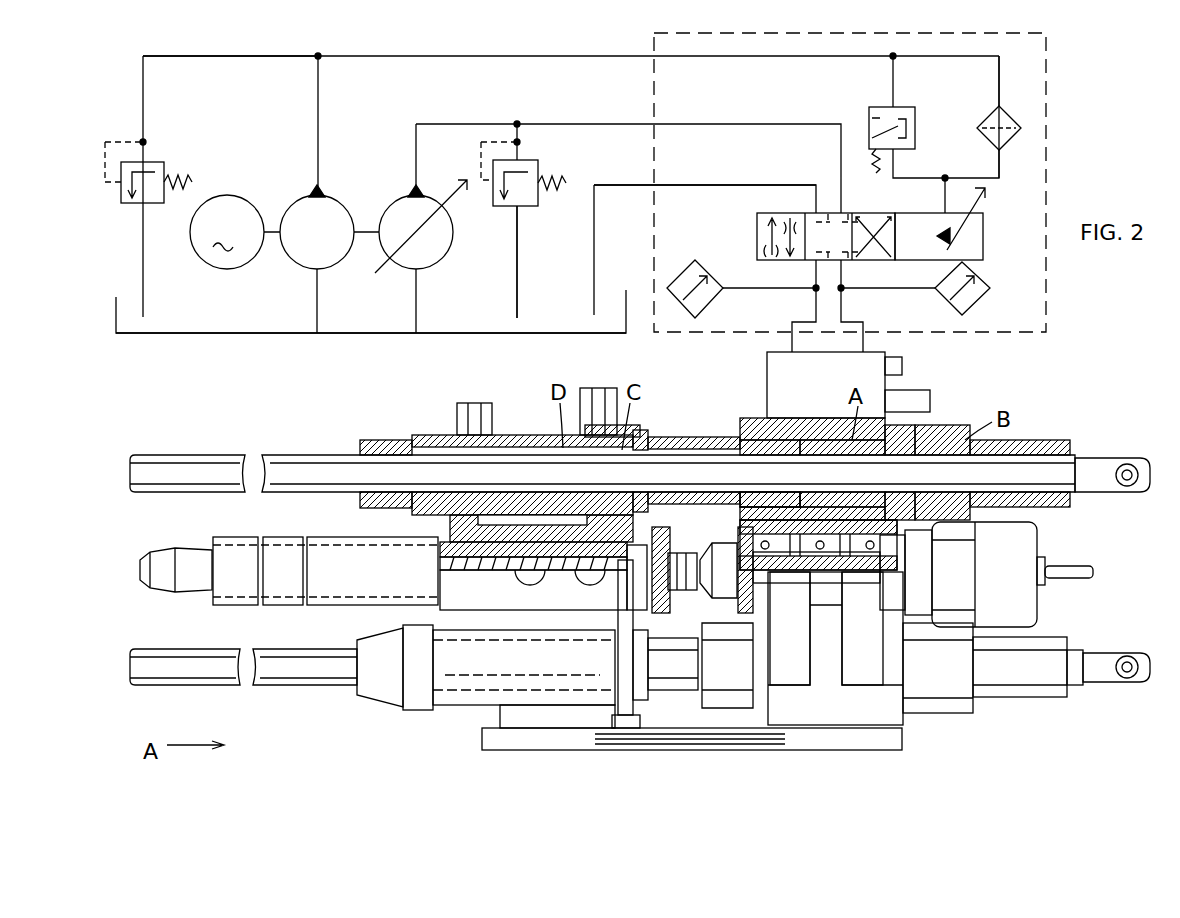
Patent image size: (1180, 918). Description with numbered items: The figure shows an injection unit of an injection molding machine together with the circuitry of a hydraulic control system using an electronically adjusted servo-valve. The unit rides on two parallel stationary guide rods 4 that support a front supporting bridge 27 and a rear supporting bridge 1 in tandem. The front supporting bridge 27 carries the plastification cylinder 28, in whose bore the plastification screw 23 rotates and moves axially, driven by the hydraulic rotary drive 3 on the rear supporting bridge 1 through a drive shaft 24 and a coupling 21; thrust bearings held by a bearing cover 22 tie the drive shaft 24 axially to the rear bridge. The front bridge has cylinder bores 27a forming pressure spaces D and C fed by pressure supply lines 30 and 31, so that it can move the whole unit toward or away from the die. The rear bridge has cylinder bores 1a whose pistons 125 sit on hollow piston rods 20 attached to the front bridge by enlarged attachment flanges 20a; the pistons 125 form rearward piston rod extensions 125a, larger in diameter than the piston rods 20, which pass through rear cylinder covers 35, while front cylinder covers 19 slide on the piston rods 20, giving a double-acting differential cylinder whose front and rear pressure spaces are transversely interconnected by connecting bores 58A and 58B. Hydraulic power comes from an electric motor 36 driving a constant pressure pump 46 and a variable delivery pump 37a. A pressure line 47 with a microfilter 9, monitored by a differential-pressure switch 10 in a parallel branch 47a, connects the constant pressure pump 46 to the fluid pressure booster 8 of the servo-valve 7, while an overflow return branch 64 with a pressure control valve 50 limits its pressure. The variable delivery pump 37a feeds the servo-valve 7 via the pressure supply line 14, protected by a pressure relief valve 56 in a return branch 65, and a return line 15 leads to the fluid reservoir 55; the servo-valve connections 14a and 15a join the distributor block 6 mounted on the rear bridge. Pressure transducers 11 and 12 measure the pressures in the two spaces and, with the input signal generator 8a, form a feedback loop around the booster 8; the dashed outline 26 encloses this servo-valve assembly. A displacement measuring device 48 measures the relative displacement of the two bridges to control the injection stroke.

The rear supporting bridge 1 is at (827, 705).
The cylinder bores 1a is at (818, 428).
The hydraulic rotary drive 3 is at (1025, 558).
The guide rods 4 is at (302, 472).
The distributor block 6 is at (780, 362).
The servo-valve 7 is at (750, 252).
The fluid pressure booster 8 is at (925, 246).
The input signal generator 8a is at (985, 222).
The microfilter 9 is at (992, 115).
The differential-pressure switch 10 is at (870, 120).
The pressure transducer 11 is at (695, 290).
The pressure transducer 12 is at (975, 290).
The pressure supply line 14 is at (700, 124).
The connection port 14a is at (863, 345).
The return line 15 is at (764, 185).
The connection port 15a is at (792, 345).
The front cylinder covers 19 is at (745, 440).
The hollow piston rods 20 is at (690, 445).
The attachment flanges 20a is at (640, 440).
The coupling 21 is at (725, 585).
The bearing cover 22 is at (748, 522).
The plastification screw 23 is at (485, 575).
The drive shaft 24 is at (805, 545).
The hydraulic control unit 26 is at (1046, 110).
The front supporting bridge 27 is at (540, 690).
The cylinder bores 27a is at (505, 512).
The plastification cylinder 28 is at (300, 600).
The pressure supply line 30 is at (470, 412).
The pressure supply line 31 is at (600, 400).
The rear cylinder covers 35 is at (938, 440).
The electric motor 36 is at (228, 195).
The variable delivery pump 37a is at (440, 250).
The constant pressure pump 46 is at (333, 200).
The pressure line 47 is at (318, 97).
The parallel branch 47a is at (893, 95).
The displacement measuring device 48 is at (900, 740).
The pressure control valve 50 is at (127, 174).
The fluid reservoir 55 is at (367, 335).
The pressure relief valve 56 is at (528, 178).
The connecting bore 58A is at (797, 672).
The connecting bore 58B is at (870, 672).
The overflow return branch 64 is at (233, 60).
The return branch 65 is at (518, 240).
The pistons 125 is at (888, 440).
The piston rod extensions 125a is at (1020, 445).